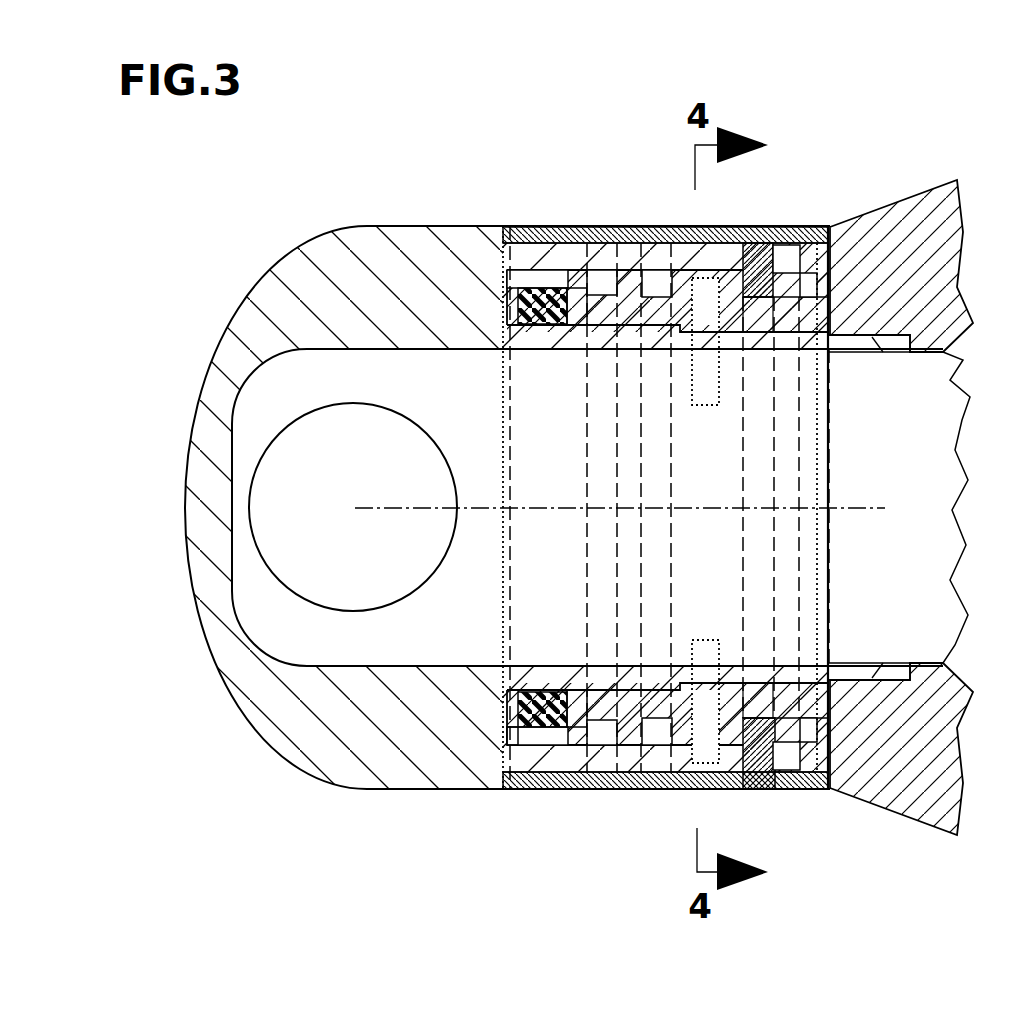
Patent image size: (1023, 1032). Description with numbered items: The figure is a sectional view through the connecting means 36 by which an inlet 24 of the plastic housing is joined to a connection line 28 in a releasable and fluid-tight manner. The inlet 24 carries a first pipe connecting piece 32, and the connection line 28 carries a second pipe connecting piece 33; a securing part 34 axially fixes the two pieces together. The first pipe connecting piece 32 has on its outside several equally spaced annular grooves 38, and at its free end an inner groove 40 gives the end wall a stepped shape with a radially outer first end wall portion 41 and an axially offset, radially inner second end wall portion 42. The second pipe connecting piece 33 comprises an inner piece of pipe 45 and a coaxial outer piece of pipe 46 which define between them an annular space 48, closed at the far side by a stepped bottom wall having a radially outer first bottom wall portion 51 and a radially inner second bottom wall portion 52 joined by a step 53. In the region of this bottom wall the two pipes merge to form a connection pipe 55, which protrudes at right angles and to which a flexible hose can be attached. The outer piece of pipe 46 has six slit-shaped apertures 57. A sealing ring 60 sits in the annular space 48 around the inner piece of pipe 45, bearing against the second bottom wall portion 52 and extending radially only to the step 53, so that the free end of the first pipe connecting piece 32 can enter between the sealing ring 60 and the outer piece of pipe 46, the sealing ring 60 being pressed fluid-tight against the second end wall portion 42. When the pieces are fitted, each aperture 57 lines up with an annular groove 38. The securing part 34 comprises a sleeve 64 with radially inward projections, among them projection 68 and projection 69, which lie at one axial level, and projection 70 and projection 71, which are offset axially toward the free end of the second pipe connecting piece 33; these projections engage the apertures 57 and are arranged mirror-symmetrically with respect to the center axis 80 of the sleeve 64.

The inlet 24 is at (908, 176).
The connection line 28 is at (180, 580).
The first pipe connecting piece 32 is at (634, 780).
The second pipe connecting piece 33 is at (684, 770).
The securing part 34 is at (563, 214).
The connecting means 36 is at (430, 186).
The annular groove 38 is at (578, 748).
The inner groove 40 is at (527, 692).
The first end wall portion 41 is at (503, 760).
The second end wall portion 42 is at (570, 690).
The inner piece of pipe 45 is at (856, 346).
The outer piece of pipe 46 is at (805, 260).
The annular space 48 is at (610, 280).
The first bottom wall portion 51 is at (513, 226).
The second bottom wall portion 52 is at (535, 312).
The step 53 is at (572, 326).
The connection pipe 55 is at (290, 426).
The aperture 57 is at (782, 778).
The sealing ring 60 is at (530, 747).
The sleeve 64 is at (796, 232).
The projection 68 is at (712, 393).
The projection 69 is at (707, 652).
The projection 70 is at (762, 300).
The projection 71 is at (758, 722).
The center axis 80 is at (858, 512).